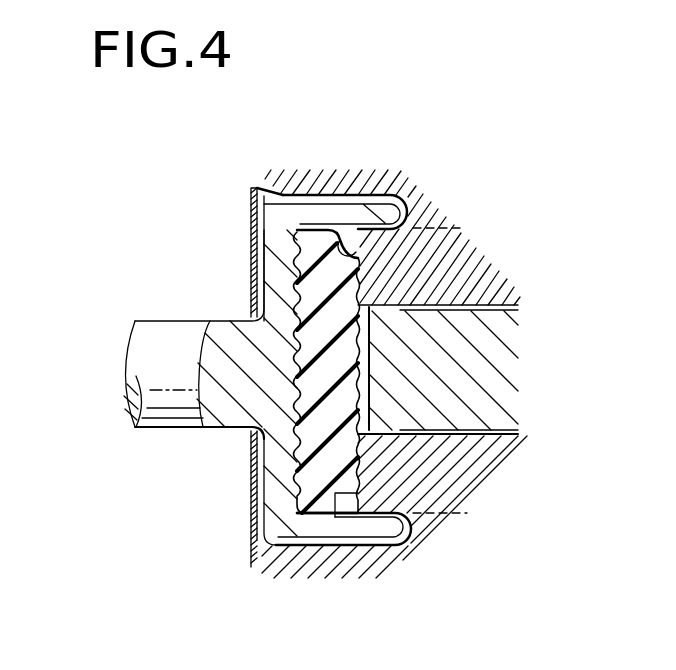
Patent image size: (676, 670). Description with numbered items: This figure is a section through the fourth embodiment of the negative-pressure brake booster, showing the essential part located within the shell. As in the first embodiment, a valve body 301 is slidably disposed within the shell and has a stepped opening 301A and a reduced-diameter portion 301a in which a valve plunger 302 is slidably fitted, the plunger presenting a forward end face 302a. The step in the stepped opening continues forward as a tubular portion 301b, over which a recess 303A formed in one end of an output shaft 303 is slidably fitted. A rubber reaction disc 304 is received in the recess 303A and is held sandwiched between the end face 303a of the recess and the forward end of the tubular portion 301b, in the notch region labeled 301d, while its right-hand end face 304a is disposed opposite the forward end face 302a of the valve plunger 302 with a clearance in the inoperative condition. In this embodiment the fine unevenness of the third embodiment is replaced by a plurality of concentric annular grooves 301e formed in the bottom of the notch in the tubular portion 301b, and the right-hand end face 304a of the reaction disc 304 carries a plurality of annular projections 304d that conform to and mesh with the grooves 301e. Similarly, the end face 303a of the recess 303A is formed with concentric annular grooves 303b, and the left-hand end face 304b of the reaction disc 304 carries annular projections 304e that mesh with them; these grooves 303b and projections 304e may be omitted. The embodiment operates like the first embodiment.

The housing body 301 is at (475, 502).
The mounting surface of housing 301a is at (470, 430).
The tubular portion 301b is at (372, 492).
The upper groove wall 301d is at (352, 252).
The concentric annular grooves 301e is at (335, 253).
The housing flange plate 301A is at (288, 538).
The base plate 302 is at (493, 354).
The mounting hole 302a is at (252, 455).
The output shaft 303 is at (117, 343).
The end face of recess 303a is at (266, 277).
The concentric annular grooves 303b is at (251, 238).
The recess 303A is at (332, 505).
The reaction disc 304 is at (316, 436).
The right-hand end face of reaction disc 304a is at (458, 296).
The lower retaining arm 304b is at (335, 520).
The annular projections 304d is at (372, 298).
The annular projections 304e is at (262, 311).